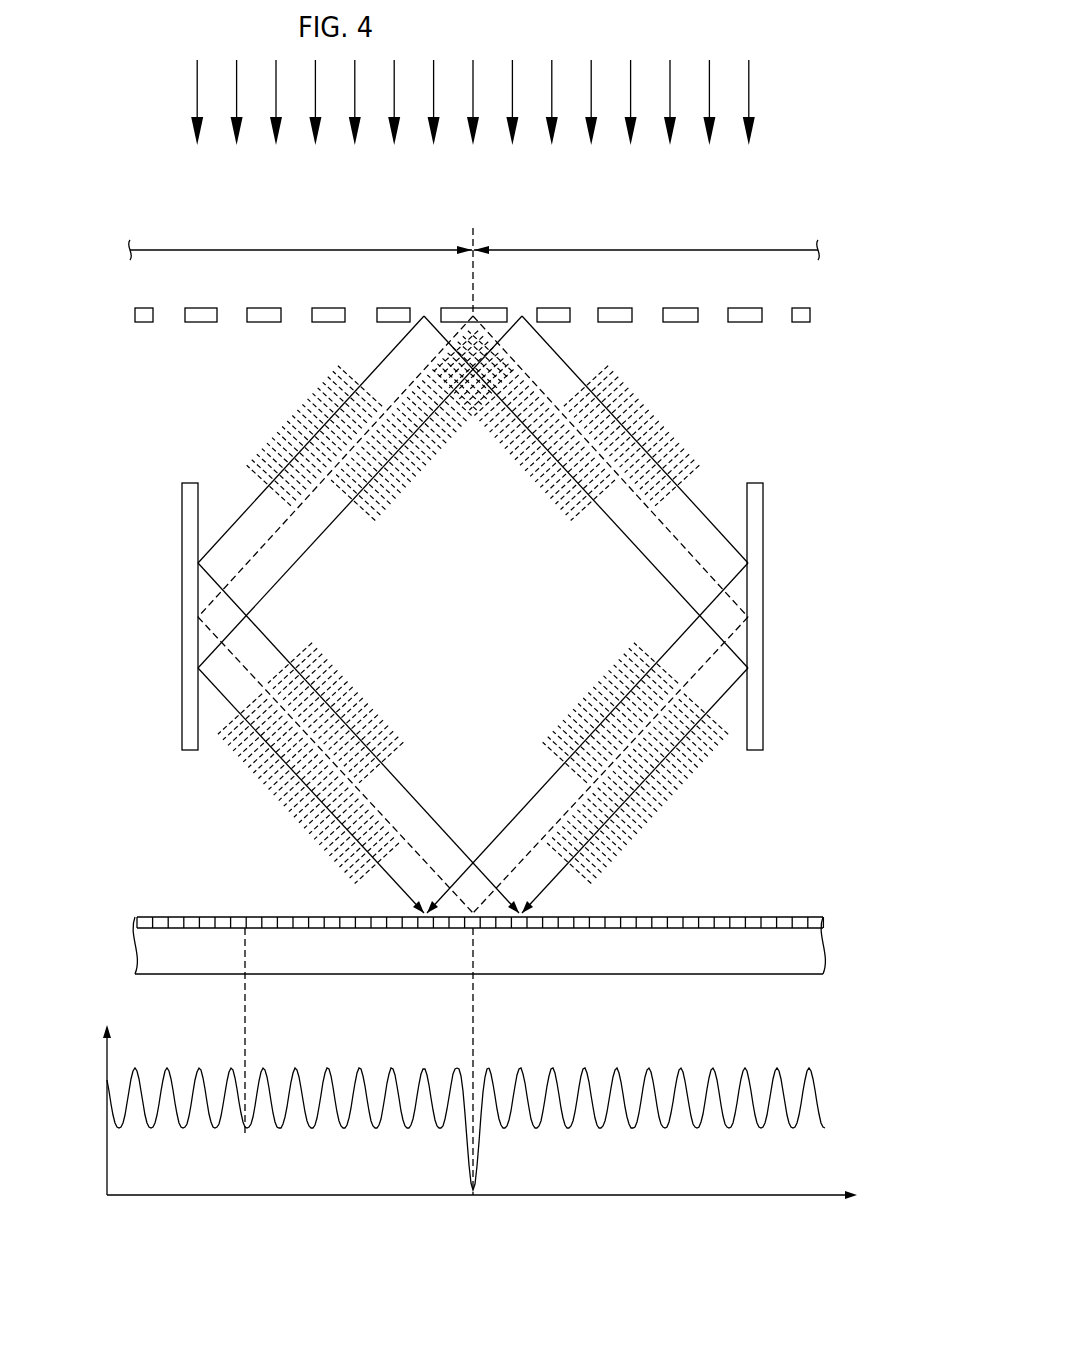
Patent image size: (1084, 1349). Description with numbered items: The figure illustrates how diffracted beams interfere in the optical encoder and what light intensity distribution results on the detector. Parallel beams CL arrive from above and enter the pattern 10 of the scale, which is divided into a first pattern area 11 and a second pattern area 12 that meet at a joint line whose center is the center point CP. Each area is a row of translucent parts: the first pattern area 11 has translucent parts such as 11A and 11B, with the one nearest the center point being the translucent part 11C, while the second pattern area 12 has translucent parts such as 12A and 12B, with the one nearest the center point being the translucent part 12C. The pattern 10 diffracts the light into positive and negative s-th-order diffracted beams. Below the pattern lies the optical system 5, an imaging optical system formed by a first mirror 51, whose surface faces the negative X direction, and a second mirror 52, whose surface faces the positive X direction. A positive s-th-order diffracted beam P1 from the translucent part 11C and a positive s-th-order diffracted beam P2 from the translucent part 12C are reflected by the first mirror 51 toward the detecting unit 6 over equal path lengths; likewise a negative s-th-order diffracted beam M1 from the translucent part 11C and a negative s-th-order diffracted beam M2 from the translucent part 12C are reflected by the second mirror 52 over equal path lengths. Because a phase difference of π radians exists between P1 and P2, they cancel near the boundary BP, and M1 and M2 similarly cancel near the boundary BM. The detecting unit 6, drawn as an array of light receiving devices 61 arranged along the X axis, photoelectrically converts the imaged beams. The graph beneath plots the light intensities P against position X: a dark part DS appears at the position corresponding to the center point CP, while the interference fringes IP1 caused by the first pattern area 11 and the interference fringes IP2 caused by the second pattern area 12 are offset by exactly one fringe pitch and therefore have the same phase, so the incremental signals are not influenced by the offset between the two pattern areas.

The parallel beams CL is at (784, 97).
The second pattern area 12 is at (190, 250).
The first pattern area 11 is at (750, 250).
The center point CP is at (473, 256).
The pattern 10 is at (516, 333).
The translucent part 12A is at (162, 322).
The opening of second pattern region 12B is at (200, 323).
The translucent part 12C is at (422, 314).
The translucent part 11A is at (802, 323).
The opening of first pattern region 11B is at (750, 323).
The translucent part 11C is at (524, 314).
The optical system 5 is at (504, 614).
The negative s-th-order diffracted beam M1 is at (338, 516).
The negative s-th-order diffracted beam M2 is at (252, 500).
The boundary BM is at (270, 537).
The positive s-th-order diffracted beam P1 is at (694, 500).
The positive s-th-order diffracted beam P2 is at (608, 516).
The boundary BP is at (673, 537).
The first mirror 51 is at (765, 716).
The second mirror 52 is at (180, 716).
The detecting unit 6 is at (522, 911).
The light receiving devices 61 is at (806, 916).
The light intensities P is at (106, 1094).
The X axis X is at (491, 1195).
The interference fringes IP1 is at (657, 1120).
The interference fringes IP2 is at (282, 1121).
The dark part DS is at (473, 1080).